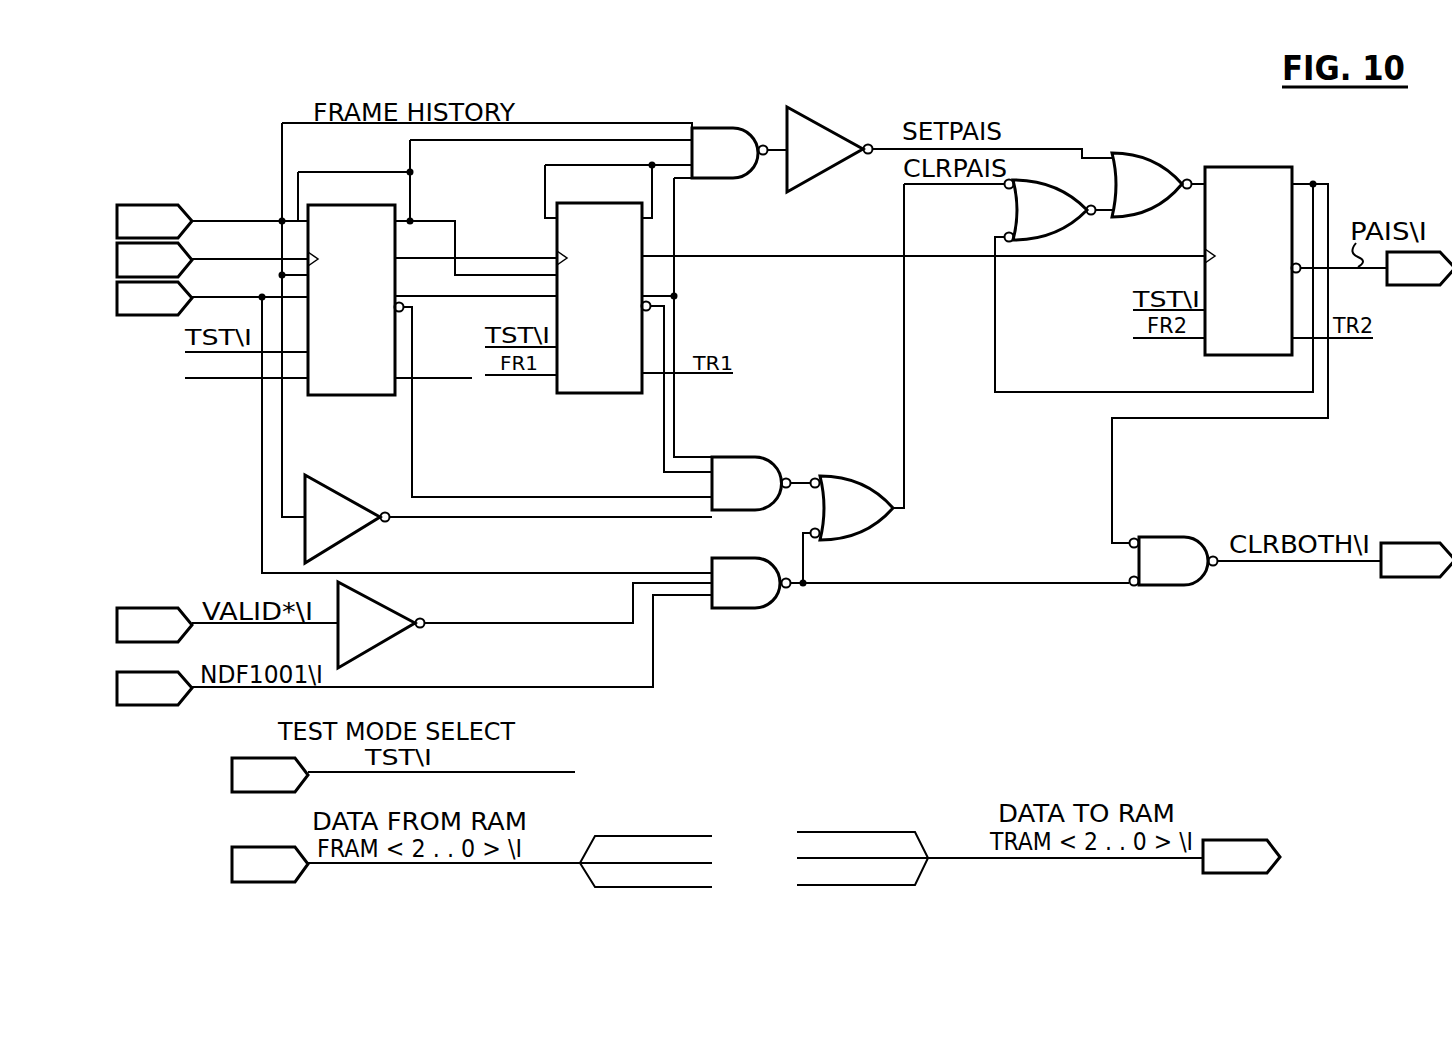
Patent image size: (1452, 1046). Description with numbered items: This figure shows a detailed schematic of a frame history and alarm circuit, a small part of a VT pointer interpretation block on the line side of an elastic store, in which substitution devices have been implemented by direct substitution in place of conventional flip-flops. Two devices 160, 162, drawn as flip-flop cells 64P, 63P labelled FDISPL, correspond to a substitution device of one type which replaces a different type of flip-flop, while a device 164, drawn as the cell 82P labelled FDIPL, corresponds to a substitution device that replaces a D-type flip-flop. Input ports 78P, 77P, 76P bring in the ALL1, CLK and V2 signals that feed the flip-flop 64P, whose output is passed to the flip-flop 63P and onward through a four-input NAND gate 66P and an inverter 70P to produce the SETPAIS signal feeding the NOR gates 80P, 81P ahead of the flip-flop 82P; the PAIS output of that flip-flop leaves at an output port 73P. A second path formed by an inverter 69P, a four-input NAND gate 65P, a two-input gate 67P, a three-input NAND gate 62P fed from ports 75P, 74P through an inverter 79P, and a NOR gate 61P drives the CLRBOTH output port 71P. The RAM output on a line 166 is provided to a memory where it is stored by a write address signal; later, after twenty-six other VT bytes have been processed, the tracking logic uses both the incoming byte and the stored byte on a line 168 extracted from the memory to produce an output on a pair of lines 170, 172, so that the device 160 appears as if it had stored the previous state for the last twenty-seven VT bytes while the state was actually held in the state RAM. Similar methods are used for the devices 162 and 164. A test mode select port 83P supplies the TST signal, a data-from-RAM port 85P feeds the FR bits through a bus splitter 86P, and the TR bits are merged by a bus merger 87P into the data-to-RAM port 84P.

The NOR gate NR2 61P is at (1174, 547).
The NAND gate ND3 62P is at (751, 570).
The FDISPL flip-flop 63P is at (601, 326).
The FDISPL flip-flop 64P is at (445, 339).
The NAND gate ND4 65P is at (751, 471).
The NAND gate ND4 66P is at (739, 139).
The NAND gate ND2 67P is at (852, 496).
The inverter IV 69P is at (352, 519).
The inverter IV 70P is at (838, 149).
The CLRBOTH\I output port 71P is at (1416, 560).
The PAIS\I output port 73P is at (1419, 268).
The NDF1001\I input port 74P is at (189, 688).
The VALID*\I input port 75P is at (227, 625).
The V2\I input port 76P is at (212, 294).
The CLK\I input port 77P is at (199, 256).
The ALL1\I input port 78P is at (199, 216).
The inverter IV 79P is at (385, 625).
The NOR gate NR2 80P is at (1050, 197).
The NOR gate NR2 81P is at (1152, 172).
The FDIPL flip-flop 82P is at (1220, 263).
The TST\I test mode select input port 83P is at (403, 775).
The TRAM 2..0 \I data to RAM output port 84P is at (1104, 856).
The FRAM 2..0 \I data from RAM input port 85P is at (406, 864).
The bus splitter 86P is at (637, 848).
The bus merger 87P is at (871, 845).
The device 160 is at (311, 395).
The device 162 is at (554, 386).
The device 164 is at (1203, 350).
The line 166 is at (431, 383).
The line 168 is at (240, 384).
The line 170 is at (412, 221).
The line 172 is at (414, 468).